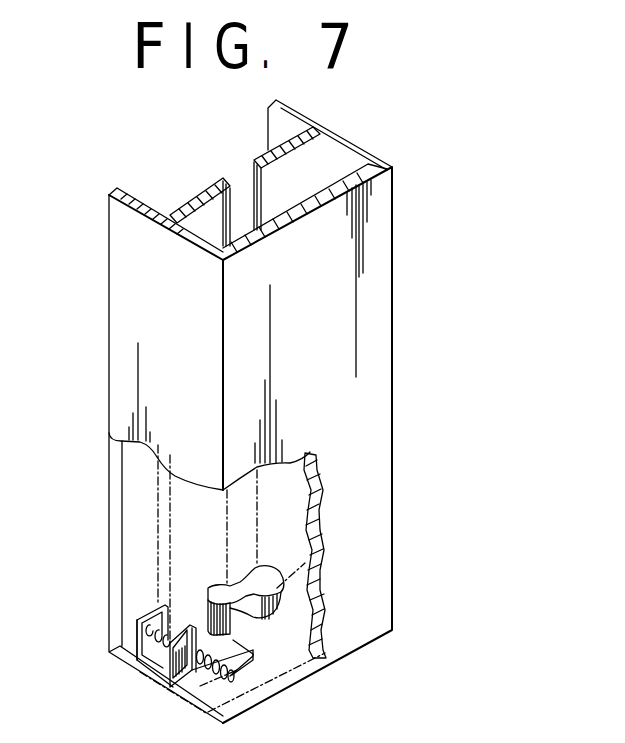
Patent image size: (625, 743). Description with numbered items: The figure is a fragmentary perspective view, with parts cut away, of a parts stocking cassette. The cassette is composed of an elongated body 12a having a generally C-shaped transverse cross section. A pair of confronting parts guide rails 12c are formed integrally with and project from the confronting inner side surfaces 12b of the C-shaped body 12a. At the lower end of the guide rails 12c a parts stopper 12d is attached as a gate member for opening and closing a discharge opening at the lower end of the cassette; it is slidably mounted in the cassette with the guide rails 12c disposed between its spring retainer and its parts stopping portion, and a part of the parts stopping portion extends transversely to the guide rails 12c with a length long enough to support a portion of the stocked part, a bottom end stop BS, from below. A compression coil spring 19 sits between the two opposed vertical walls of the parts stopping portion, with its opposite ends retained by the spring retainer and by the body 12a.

The elongated body 12a is at (393, 237).
The inner side surfaces 12b is at (137, 194).
The parts guide rails 12c is at (254, 160).
The parts stopper 12d is at (150, 653).
The compression coil spring 19 is at (233, 674).
The bottom end stop BS is at (258, 612).